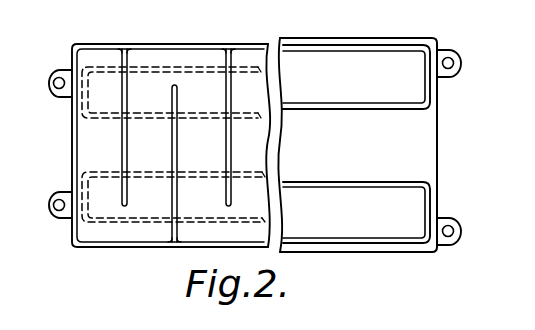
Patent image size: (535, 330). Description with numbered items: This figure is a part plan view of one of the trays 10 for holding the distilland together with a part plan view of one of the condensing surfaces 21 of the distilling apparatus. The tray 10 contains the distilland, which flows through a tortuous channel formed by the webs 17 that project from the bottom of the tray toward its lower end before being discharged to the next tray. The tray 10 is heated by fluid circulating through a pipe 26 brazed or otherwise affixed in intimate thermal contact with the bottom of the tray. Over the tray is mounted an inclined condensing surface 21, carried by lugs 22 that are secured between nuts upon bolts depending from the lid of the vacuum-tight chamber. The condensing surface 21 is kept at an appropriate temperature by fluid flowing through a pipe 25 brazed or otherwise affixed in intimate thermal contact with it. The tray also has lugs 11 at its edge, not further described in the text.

The tray 10 is at (92, 52).
The attaching lug 11 is at (53, 77).
The web 17 is at (127, 105).
The condensing surface 21 is at (418, 152).
The lug 22 is at (444, 52).
The pipe 25 is at (427, 110).
The pipe 26 is at (102, 67).